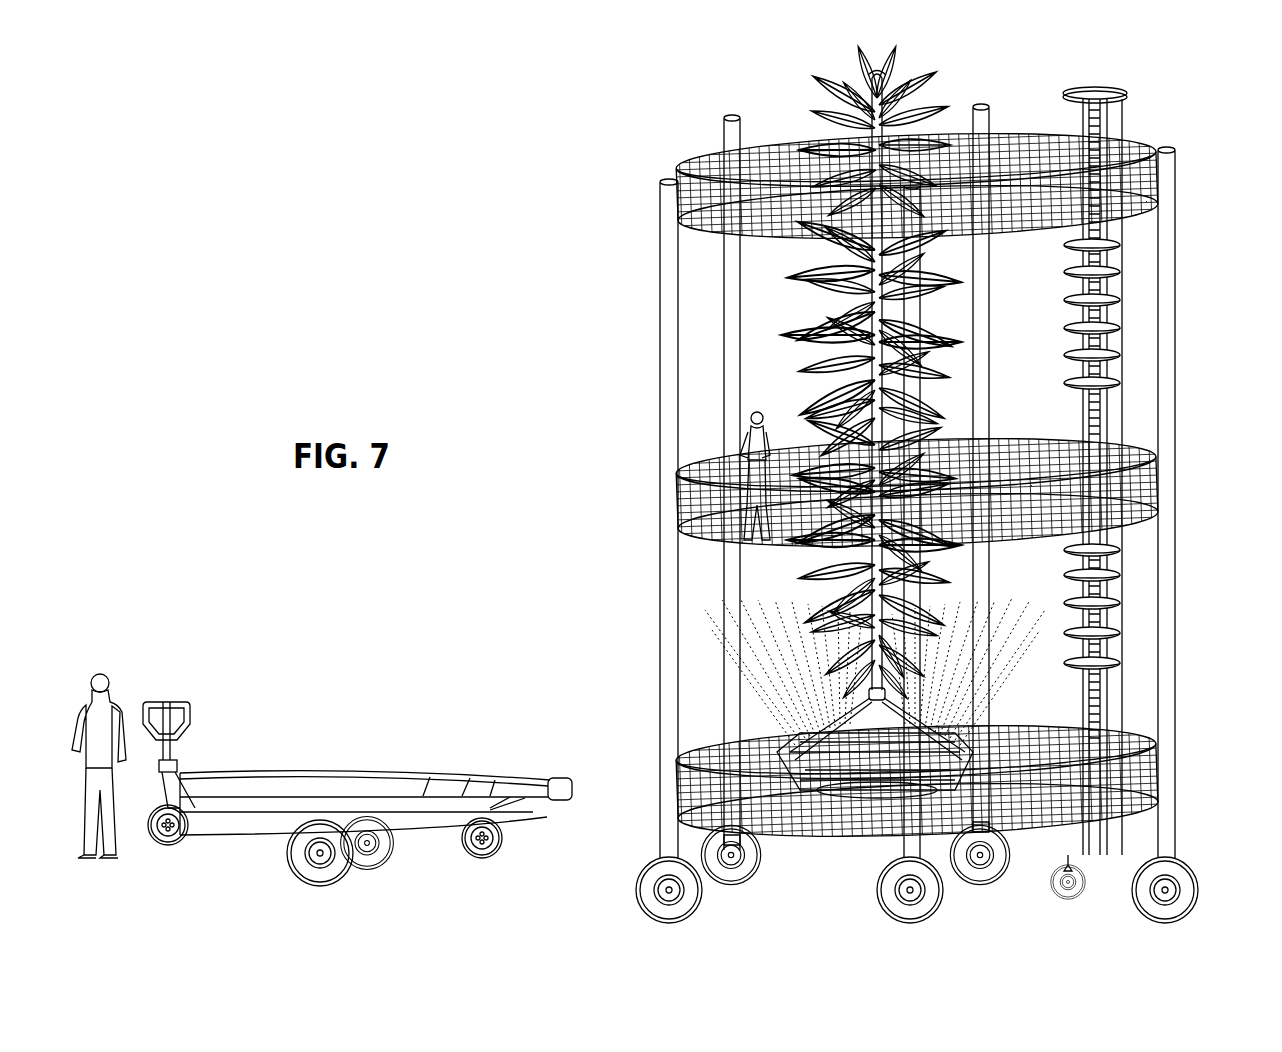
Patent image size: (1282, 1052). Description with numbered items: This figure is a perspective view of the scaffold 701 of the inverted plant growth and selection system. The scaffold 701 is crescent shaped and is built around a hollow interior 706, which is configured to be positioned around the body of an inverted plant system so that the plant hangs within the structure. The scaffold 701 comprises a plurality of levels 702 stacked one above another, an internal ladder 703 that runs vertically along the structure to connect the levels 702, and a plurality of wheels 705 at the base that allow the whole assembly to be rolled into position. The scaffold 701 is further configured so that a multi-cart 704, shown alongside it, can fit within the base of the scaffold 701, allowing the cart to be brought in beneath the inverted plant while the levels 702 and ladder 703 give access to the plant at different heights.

The scaffold 701 is at (635, 215).
The plurality of levels 702 is at (795, 805).
The internal ladder 703 is at (1108, 630).
The multi-cart 704 is at (340, 760).
The plurality of wheels 705 is at (645, 890).
The hollow interior 706 is at (1030, 335).